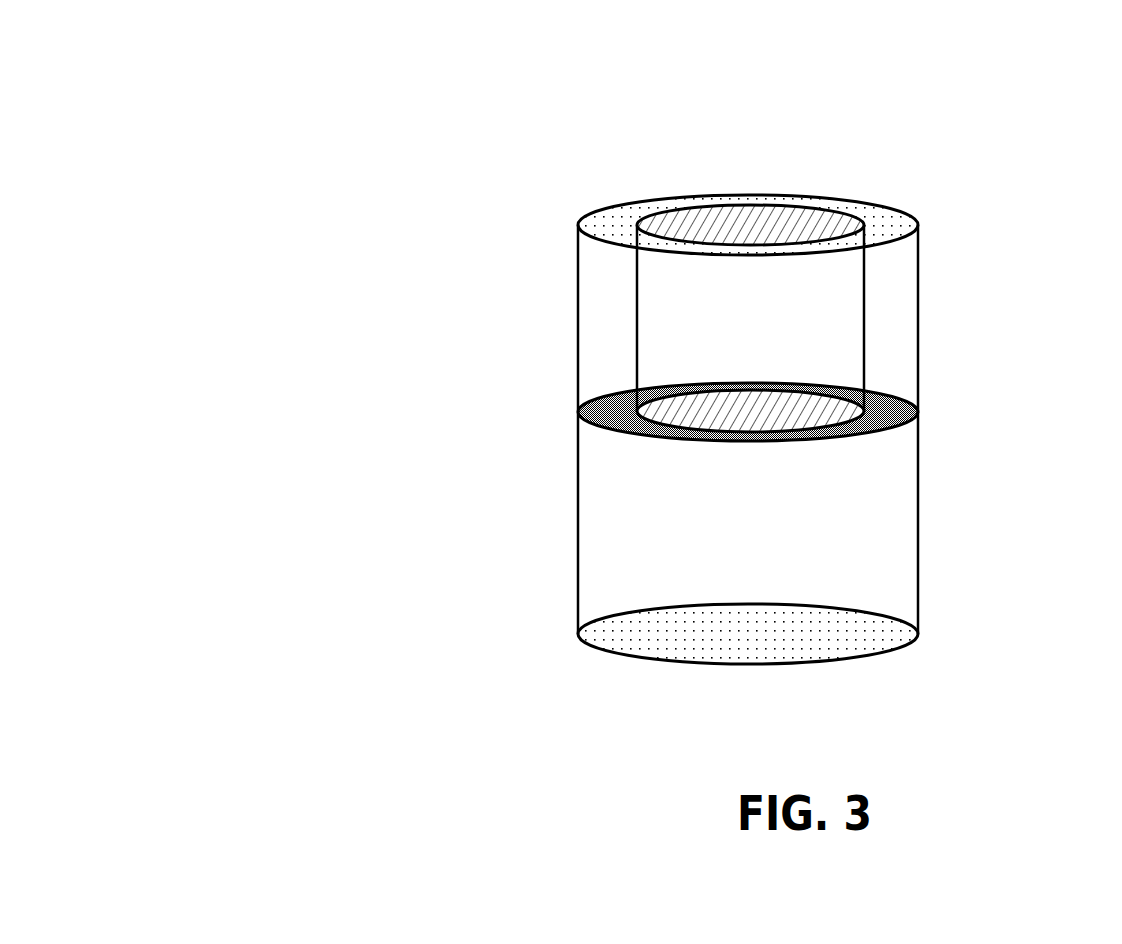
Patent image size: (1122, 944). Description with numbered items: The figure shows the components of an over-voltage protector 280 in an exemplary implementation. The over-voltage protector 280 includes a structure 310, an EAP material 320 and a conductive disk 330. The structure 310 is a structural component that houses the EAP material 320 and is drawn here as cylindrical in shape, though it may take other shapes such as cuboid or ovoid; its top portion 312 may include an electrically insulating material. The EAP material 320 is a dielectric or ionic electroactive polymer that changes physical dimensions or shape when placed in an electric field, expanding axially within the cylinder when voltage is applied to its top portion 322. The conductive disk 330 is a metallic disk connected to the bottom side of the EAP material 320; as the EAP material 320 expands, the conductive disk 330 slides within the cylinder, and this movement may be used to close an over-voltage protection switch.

The over-voltage protector 280 is at (365, 73).
The structure 310 is at (577, 358).
The top portion of structure 312 is at (888, 210).
The EAP material 320 is at (850, 313).
The top portion of EAP material 322 is at (725, 217).
The conductive disk 330 is at (885, 424).